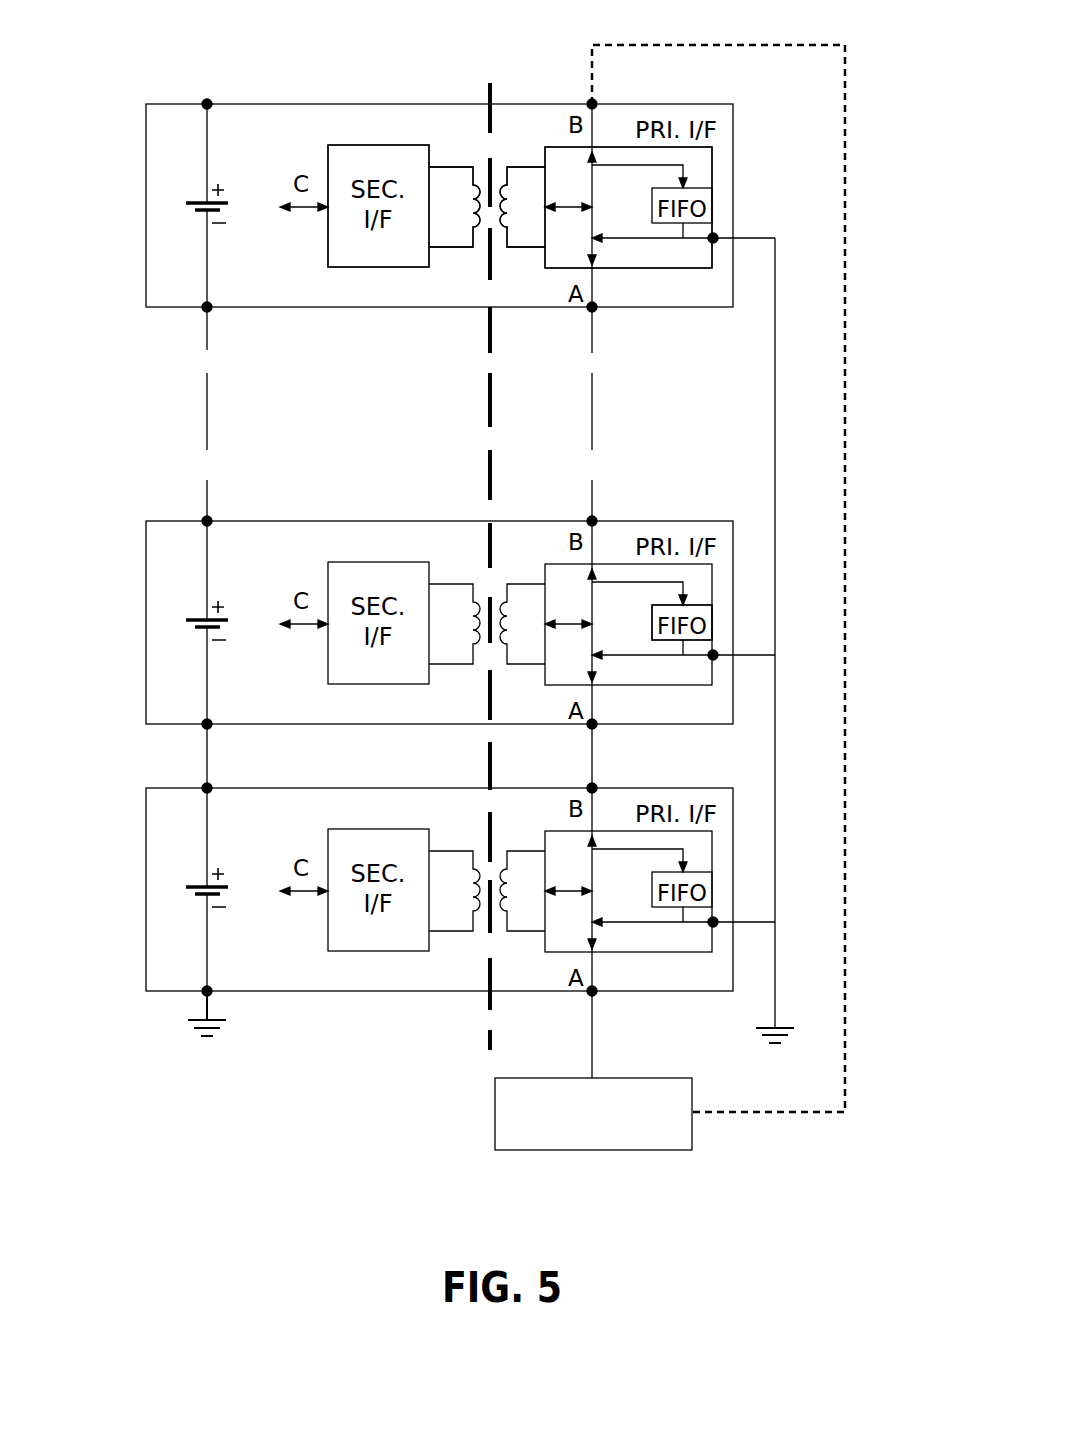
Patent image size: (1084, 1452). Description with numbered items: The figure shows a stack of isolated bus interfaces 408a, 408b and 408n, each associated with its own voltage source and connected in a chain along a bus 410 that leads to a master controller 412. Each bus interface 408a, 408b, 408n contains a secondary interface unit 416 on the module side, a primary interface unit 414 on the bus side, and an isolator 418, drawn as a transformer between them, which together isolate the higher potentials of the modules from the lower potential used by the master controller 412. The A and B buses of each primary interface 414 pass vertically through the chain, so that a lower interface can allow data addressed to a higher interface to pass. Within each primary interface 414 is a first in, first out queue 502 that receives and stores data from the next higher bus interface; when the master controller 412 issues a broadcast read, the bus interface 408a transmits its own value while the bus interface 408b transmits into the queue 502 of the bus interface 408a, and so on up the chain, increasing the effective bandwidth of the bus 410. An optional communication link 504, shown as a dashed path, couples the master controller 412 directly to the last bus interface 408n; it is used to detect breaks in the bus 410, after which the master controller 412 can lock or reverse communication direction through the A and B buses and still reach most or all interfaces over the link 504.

The bus interface 408n is at (460, 235).
The bus interface 408b is at (460, 649).
The bus interface 408a is at (254, 991).
The secondary interface unit 416 is at (383, 267).
The isolator 418 is at (484, 167).
The primary interface unit 414 is at (651, 268).
The queue 502 is at (697, 640).
The bus 410 is at (592, 1043).
The master controller 412 is at (650, 1150).
The communication link 504 is at (747, 1113).